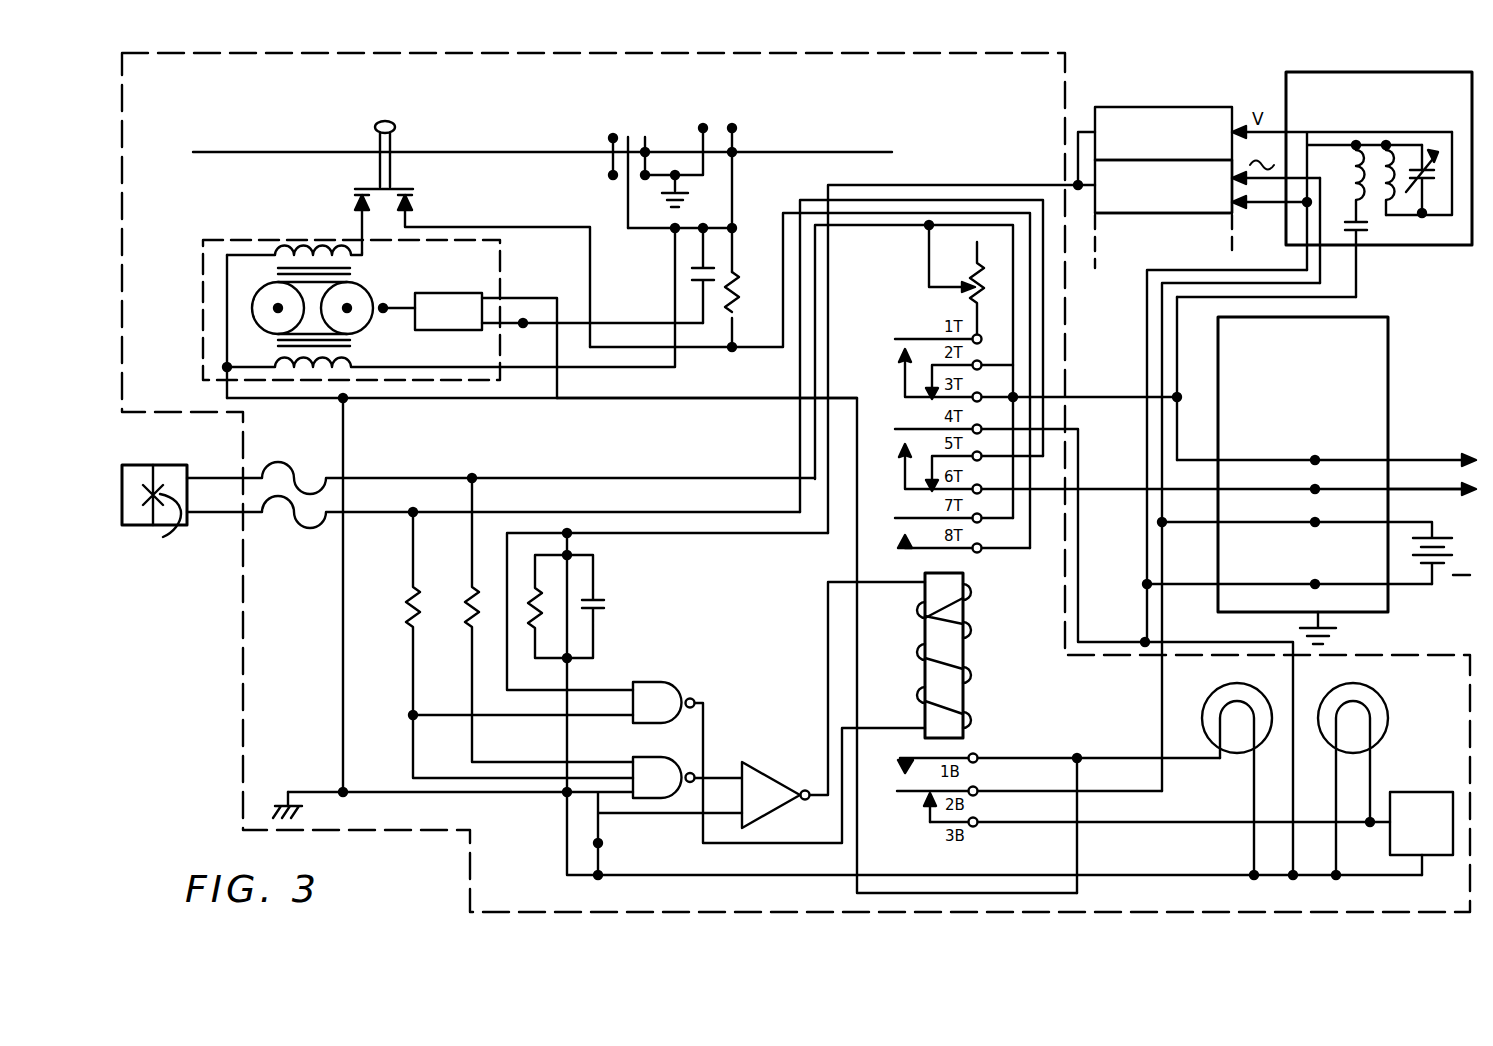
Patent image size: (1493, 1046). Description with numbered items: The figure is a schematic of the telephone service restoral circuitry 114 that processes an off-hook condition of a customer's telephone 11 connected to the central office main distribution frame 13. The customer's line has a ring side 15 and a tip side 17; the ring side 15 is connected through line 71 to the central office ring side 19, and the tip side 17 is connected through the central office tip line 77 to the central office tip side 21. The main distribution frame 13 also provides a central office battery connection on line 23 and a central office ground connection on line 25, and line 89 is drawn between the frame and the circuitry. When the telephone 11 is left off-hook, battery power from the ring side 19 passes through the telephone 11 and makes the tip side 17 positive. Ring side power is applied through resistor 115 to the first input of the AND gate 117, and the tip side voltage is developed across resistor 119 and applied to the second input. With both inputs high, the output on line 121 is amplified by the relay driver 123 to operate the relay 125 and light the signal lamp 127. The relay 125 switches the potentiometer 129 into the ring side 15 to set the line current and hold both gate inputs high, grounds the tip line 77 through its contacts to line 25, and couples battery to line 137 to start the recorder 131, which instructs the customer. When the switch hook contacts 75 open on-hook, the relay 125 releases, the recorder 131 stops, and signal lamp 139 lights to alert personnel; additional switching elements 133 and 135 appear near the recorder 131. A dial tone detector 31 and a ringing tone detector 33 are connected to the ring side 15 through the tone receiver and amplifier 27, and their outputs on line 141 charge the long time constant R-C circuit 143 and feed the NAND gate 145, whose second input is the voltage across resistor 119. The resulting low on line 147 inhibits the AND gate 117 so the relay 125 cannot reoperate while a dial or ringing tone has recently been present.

The telephone 11 is at (147, 462).
The main distribution frame 13 is at (1390, 302).
The ring side 15 is at (218, 478).
The tip side 17 is at (218, 512).
The ring side of central office equipment 19 is at (1428, 460).
The tip side of central office equipment 21 is at (1410, 492).
The central office battery connection line 23 is at (1368, 525).
The central office ground connection line 25 is at (1400, 588).
The tone receiver and amplifier 27 is at (1286, 100).
The dial tone detector 31 is at (1172, 108).
The ringing tone detector 33 is at (1180, 213).
The line 71 is at (1202, 458).
The switch hook contacts 75 is at (168, 537).
The central office tip line 77 is at (1192, 502).
The central office ground line 89 is at (1193, 588).
The telephone service restoral circuitry 114 is at (243, 648).
The resistor 115 is at (472, 607).
The AND gate 117 is at (673, 796).
The resistor 119 is at (413, 607).
The line 121 is at (691, 772).
The relay driver 123 is at (758, 788).
The relay 125 is at (950, 694).
The signal lamp 127 is at (1203, 708).
The potentiometer 129 is at (977, 268).
The recorder 131 is at (236, 240).
The switch 133 is at (641, 140).
The switch 135 is at (721, 140).
The line 137 is at (857, 553).
The signal lamp 139 is at (1385, 708).
The line 141 is at (828, 308).
The long time constant R-C circuit 143 is at (570, 593).
The NAND gate 145 is at (665, 694).
The line 147 is at (705, 727).